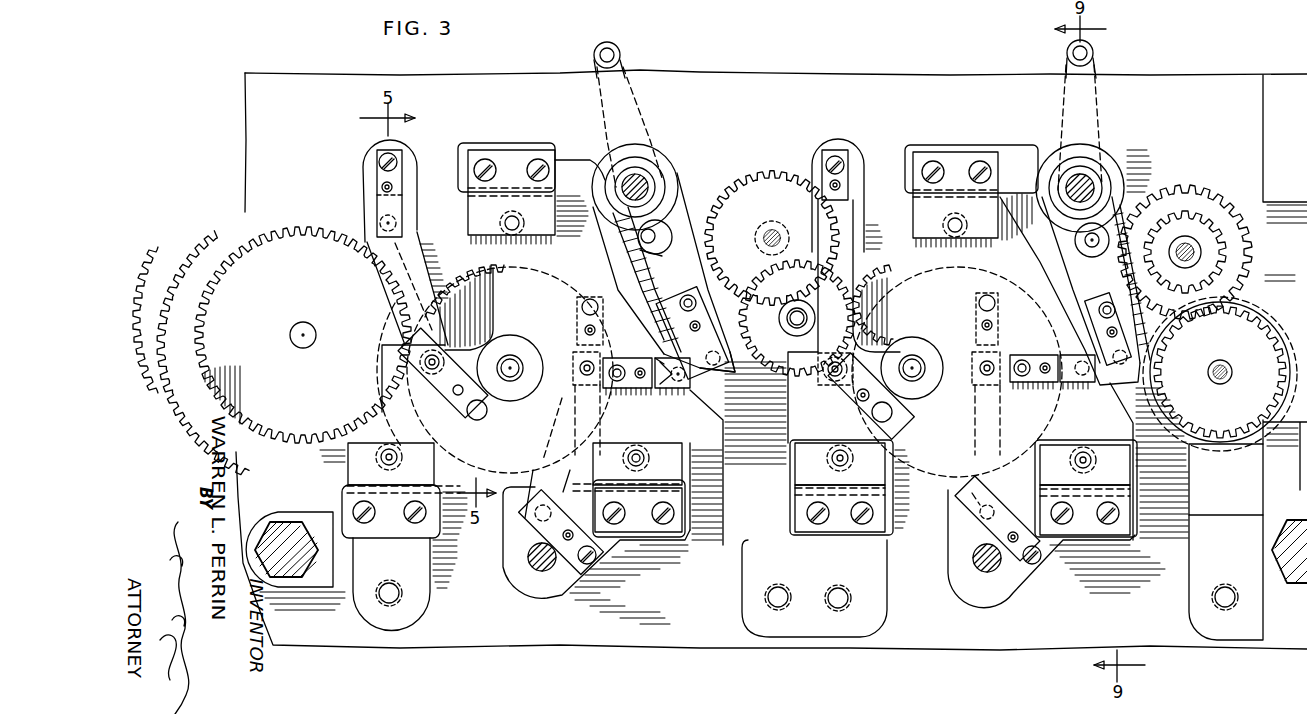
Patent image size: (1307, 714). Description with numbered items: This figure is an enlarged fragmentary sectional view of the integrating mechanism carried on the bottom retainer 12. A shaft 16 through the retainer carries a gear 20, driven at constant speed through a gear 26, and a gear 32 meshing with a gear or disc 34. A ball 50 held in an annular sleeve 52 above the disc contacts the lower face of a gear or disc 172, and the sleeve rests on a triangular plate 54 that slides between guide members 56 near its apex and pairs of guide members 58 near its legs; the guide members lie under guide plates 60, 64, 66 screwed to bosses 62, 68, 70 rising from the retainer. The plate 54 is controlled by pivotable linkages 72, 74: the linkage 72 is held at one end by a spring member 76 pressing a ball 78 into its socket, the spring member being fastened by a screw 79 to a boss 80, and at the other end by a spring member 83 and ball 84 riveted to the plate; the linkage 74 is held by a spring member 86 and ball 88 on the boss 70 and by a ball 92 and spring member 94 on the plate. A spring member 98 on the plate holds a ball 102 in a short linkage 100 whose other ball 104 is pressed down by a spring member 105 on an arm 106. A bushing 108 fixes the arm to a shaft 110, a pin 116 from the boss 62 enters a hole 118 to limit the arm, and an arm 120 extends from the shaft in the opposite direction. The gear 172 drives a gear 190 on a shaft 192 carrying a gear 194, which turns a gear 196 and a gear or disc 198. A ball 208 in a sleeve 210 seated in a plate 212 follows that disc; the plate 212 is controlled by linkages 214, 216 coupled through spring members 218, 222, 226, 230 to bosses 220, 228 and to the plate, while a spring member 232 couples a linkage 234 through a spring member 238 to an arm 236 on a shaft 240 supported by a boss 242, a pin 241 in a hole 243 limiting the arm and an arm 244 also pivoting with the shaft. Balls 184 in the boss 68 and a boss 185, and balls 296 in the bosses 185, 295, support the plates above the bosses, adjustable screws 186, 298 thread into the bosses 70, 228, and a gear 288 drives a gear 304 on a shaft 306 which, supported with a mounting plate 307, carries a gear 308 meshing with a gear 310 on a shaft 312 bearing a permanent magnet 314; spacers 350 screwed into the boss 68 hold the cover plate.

The bottom retainer 12 is at (682, 646).
The shaft 16 is at (296, 342).
The gear 20 is at (218, 240).
The gear 26 is at (140, 268).
The gear 32 is at (282, 238).
The gear or disc 34 is at (462, 272).
The ball 50 is at (510, 355).
The annular sleeve 52 is at (528, 348).
The plate 54 is at (490, 250).
The guide members 56 is at (505, 222).
The guide members 58 is at (392, 450).
The guide plates 60 is at (508, 150).
The boss 62 is at (575, 150).
The guide plate 64 is at (347, 463).
The guide plate 66 is at (692, 460).
The boss 68 is at (405, 632).
The boss 70 is at (520, 590).
The linkage 72 is at (421, 240).
The linkage 74 is at (560, 404).
The spring member 76 is at (377, 172).
The ball 78 is at (380, 222).
The screw 79 is at (377, 155).
The boss 80 is at (370, 185).
The spring member 83 is at (480, 420).
The ball 84 is at (425, 362).
The spring member 86 is at (532, 545).
The ball 88 is at (522, 530).
The ball 92 is at (580, 368).
The spring member 94 is at (580, 303).
The spring member 98 is at (630, 390).
The linkage 100 is at (668, 358).
The ball 102 is at (680, 390).
The ball 104 is at (727, 380).
The spring member 105 is at (670, 308).
The arm 106 is at (641, 283).
The bushing 108 is at (663, 183).
The shaft 110 is at (645, 172).
The pin 116 is at (640, 240).
The hole 118 is at (640, 252).
The arm 120 is at (622, 65).
The gear or disc 172 is at (738, 380).
The balls 184 is at (386, 606).
The boss 185 is at (742, 570).
The screw 186 is at (528, 562).
The gear 190 is at (753, 178).
The shaft 192 is at (764, 230).
The gear 194 is at (784, 230).
The gear 196 is at (850, 282).
The gear or disc 198 is at (858, 290).
The ball 208 is at (925, 360).
The sleeve 210 is at (905, 355).
The plate 212 is at (795, 462).
The linkage 214 is at (860, 222).
The linkage 216 is at (972, 505).
The spring member 218 is at (821, 150).
The boss 220 is at (858, 152).
The spring member 222 is at (892, 418).
The spring member 226 is at (1040, 570).
The boss 228 is at (960, 580).
The spring member 230 is at (976, 305).
The spring member 232 is at (1035, 383).
The linkage 234 is at (1088, 392).
The arm 236 is at (1095, 298).
The spring member 238 is at (1093, 335).
The shaft 240 is at (1106, 160).
The pin 241 is at (1084, 248).
The boss 242 is at (1030, 150).
The hole 243 is at (1076, 243).
The arm 244 is at (1095, 62).
The gear 288 is at (1135, 476).
The boss 295 is at (1189, 583).
The balls 296 is at (850, 600).
The screw 298 is at (973, 558).
The gear 304 is at (1220, 250).
The shaft 306 is at (1200, 259).
The mounting plate 307 is at (1272, 428).
The gear 308 is at (1240, 284).
The gear 310 is at (1247, 312).
The shaft 312 is at (1228, 365).
The permanent magnet 314 is at (1232, 448).
The spacers 350 is at (285, 520).